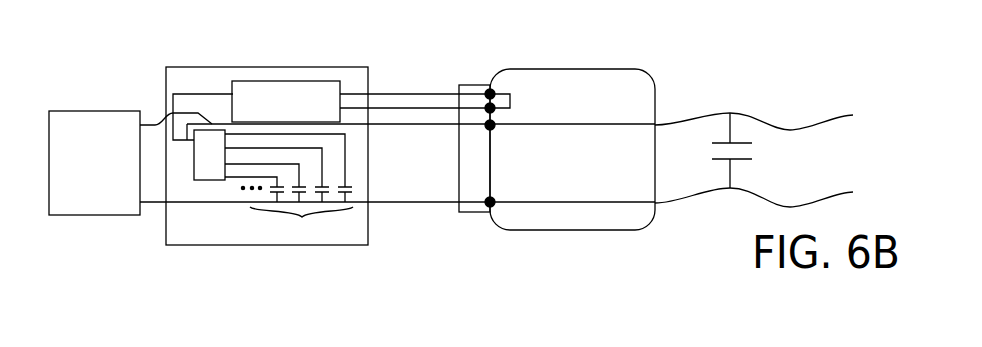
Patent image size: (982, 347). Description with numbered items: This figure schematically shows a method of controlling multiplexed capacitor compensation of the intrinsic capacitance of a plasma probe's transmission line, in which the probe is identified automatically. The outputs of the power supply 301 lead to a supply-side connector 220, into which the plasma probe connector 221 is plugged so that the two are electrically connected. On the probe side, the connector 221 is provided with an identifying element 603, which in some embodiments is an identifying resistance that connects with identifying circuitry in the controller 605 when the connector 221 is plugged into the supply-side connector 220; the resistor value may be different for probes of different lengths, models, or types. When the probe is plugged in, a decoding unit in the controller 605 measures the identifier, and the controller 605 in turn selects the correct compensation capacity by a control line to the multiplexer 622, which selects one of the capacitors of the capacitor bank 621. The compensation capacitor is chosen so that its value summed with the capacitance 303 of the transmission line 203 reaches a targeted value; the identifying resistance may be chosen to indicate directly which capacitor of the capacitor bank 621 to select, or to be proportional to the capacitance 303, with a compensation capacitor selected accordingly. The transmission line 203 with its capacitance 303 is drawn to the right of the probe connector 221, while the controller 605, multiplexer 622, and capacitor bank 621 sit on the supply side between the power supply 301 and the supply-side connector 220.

The power supply 301 is at (80, 111).
The supply-side connector 220 is at (368, 67).
The controller 605 is at (290, 81).
The multiplexer 622 is at (205, 180).
The capacitor bank 621 is at (302, 217).
The identifying element 603 is at (511, 99).
The plasma probe connector 221 is at (528, 69).
The transmission line 203 is at (840, 122).
The capacitance 303 is at (752, 159).